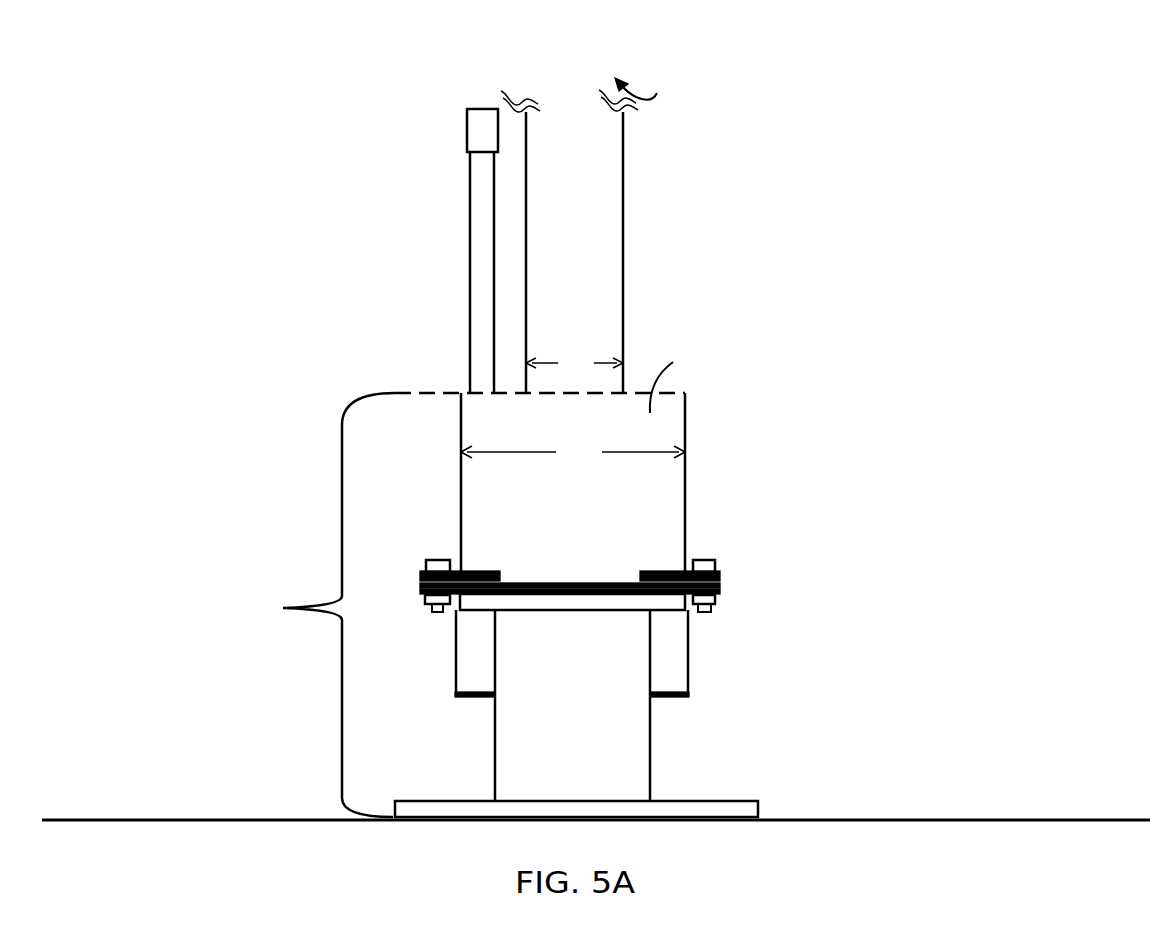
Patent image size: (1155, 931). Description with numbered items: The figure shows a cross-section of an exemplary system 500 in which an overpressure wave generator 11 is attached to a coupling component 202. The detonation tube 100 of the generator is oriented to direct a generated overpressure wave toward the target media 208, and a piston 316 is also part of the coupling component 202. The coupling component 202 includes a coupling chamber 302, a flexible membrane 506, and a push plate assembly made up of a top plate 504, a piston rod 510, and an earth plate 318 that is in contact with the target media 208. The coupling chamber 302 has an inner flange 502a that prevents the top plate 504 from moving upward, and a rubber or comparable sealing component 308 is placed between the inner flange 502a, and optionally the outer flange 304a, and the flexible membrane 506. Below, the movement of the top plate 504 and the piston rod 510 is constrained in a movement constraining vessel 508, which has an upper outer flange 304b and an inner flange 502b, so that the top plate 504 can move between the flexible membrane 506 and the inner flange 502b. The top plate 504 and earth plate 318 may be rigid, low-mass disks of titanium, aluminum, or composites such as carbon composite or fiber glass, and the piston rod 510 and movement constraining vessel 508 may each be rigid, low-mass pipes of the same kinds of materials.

The system 500 is at (590, 39).
The overpressure wave generator 11 is at (641, 80).
The piston 316 is at (468, 203).
The detonation tube 100 is at (625, 327).
The coupling chamber 302 is at (688, 432).
The coupling component 202 is at (317, 605).
The inner flange 502a is at (478, 573).
The outer flange 304a is at (720, 571).
The sealing component 308 is at (720, 580).
The flexible membrane 506 is at (723, 595).
The top plate 504 is at (525, 600).
The upper outer flange 304b is at (722, 602).
The movement constraining vessel 508 is at (690, 665).
The inner flange 502b is at (677, 698).
The piston rod 510 is at (650, 755).
The earth plate 318 is at (695, 806).
The target media 208 is at (148, 852).